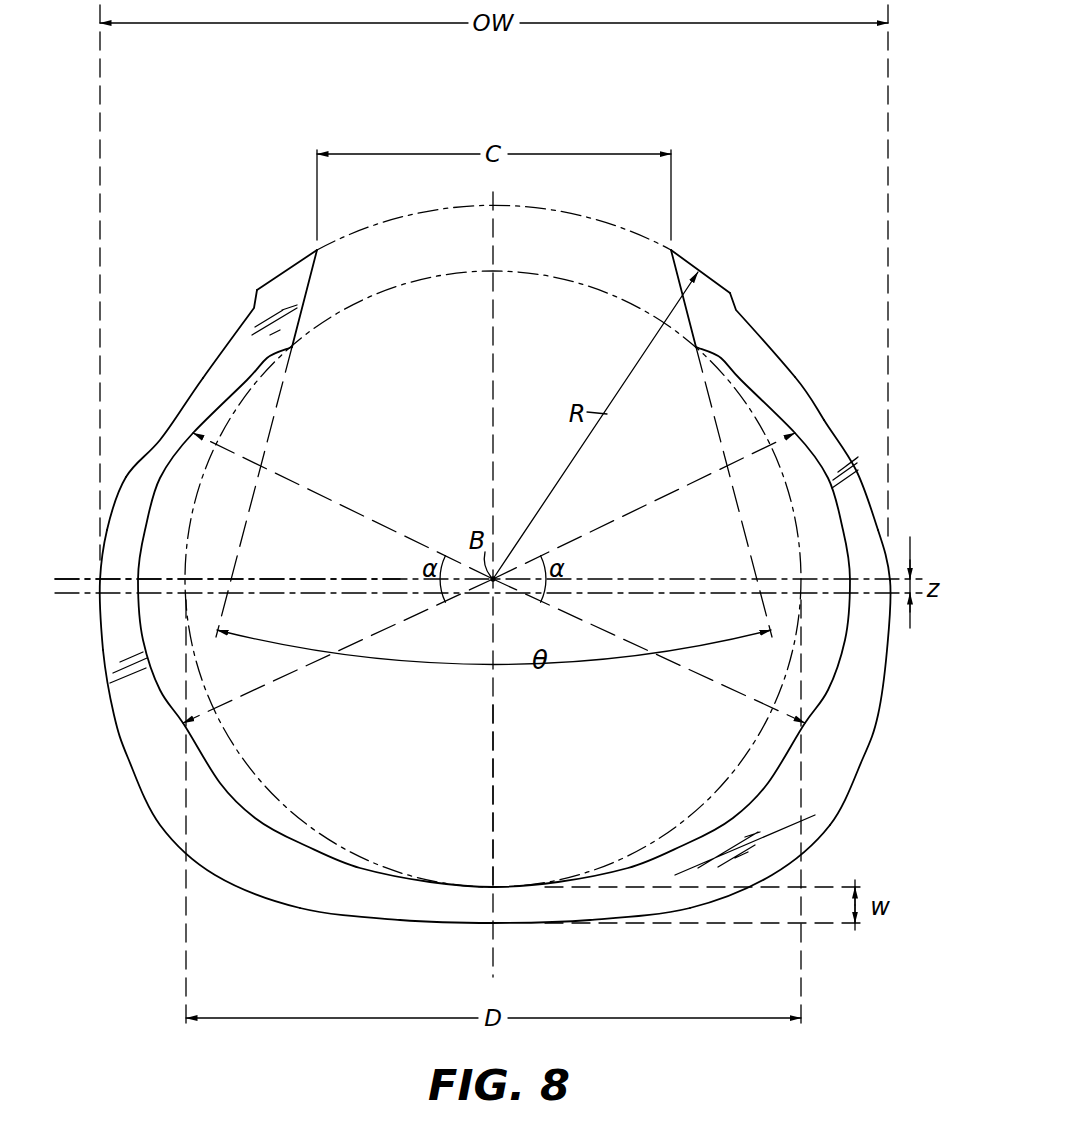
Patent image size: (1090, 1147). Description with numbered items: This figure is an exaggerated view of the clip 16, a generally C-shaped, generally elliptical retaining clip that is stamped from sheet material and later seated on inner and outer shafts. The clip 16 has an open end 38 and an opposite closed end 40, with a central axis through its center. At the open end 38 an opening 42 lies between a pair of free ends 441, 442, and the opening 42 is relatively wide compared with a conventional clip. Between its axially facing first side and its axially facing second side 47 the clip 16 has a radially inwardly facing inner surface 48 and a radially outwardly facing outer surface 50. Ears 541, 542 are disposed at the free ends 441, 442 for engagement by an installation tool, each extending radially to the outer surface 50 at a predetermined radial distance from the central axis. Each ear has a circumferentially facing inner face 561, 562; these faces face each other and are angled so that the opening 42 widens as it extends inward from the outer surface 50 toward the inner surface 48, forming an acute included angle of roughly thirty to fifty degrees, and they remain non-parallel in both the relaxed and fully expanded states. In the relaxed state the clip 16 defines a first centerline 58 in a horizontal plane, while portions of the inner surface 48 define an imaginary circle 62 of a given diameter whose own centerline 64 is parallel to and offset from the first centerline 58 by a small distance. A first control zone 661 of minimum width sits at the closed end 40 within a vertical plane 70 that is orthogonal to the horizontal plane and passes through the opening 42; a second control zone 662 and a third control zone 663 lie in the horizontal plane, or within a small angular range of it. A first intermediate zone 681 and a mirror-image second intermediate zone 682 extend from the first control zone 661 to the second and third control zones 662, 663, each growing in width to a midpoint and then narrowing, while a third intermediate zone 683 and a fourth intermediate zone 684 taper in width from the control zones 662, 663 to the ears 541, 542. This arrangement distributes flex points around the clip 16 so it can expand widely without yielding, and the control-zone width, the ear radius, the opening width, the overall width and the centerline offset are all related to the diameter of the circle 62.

The clip 16 is at (846, 190).
The open end 38 is at (75, 372).
The closed end 40 is at (856, 858).
The opening 42 is at (305, 310).
The first free end 441 is at (253, 317).
The second free end 442 is at (735, 293).
The second side 47 is at (797, 393).
The inner surface 48 is at (152, 660).
The outer surface 50 is at (890, 657).
The first ear 541 is at (290, 288).
The second ear 542 is at (712, 298).
The inner face of first ear 561 is at (313, 288).
The inner face of second ear 562 is at (691, 332).
The first centerline 58 is at (78, 578).
The imaginary circle 62 is at (257, 773).
The second centerline 64 is at (78, 595).
The first control zone 661 is at (490, 905).
The second control zone 662 is at (120, 578).
The third control zone 663 is at (891, 578).
The first intermediate zone 681 is at (150, 757).
The second intermediate zone 682 is at (843, 717).
The third intermediate zone 683 is at (203, 377).
The fourth intermediate zone 684 is at (770, 362).
The vertical plane 70 is at (493, 815).